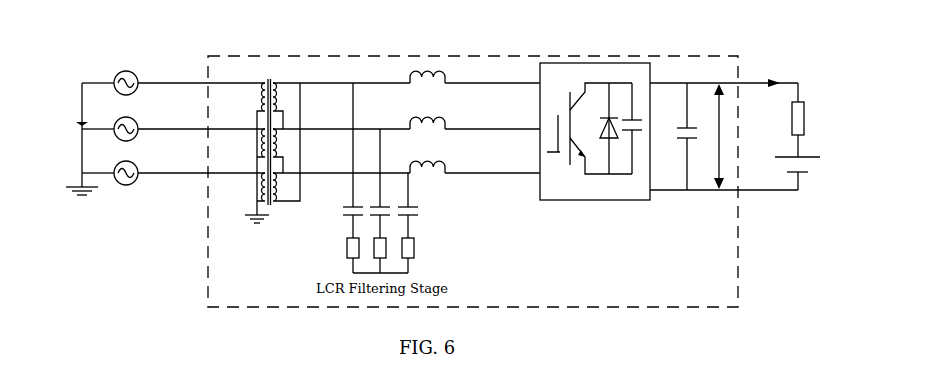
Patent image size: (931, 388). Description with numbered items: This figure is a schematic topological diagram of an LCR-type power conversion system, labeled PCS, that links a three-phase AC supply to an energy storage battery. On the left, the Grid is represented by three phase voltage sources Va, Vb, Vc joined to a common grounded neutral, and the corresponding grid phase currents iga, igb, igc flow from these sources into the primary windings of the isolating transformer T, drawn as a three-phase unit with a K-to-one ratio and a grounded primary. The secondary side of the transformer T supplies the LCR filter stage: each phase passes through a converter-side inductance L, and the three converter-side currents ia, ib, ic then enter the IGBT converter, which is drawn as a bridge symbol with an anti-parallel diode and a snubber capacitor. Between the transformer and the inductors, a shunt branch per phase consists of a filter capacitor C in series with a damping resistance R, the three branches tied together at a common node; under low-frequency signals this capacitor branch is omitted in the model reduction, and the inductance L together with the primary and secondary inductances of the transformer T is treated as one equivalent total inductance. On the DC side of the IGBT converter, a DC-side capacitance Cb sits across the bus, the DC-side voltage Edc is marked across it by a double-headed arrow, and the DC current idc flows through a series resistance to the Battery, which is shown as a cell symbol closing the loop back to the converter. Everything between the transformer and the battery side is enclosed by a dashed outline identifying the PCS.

The grid Grid is at (78, 139).
The grid phase a voltage Va is at (135, 88).
The grid phase b voltage Vb is at (135, 134).
The grid phase c voltage Vc is at (135, 178).
The grid phase a current iga is at (201, 94).
The grid phase b current igb is at (201, 140).
The grid phase c current igc is at (201, 184).
The power conversion system PCS is at (473, 169).
The transformer T is at (268, 166).
The converter-side phase a current ia is at (406, 93).
The converter-side phase b current ib is at (406, 138).
The converter-side phase c current ic is at (406, 183).
The converter-side inductance L is at (427, 116).
The filter capacitor C is at (388, 151).
The damping resistance R is at (389, 244).
The IGBT converter IGBT is at (595, 143).
The DC-side capacitance Cb is at (694, 136).
The DC-side voltage Edc is at (725, 136).
The DC current idc is at (771, 90).
The battery Battery is at (787, 147).